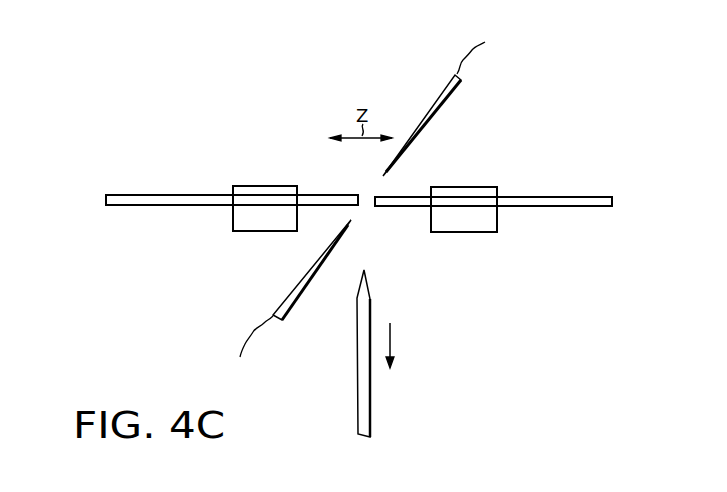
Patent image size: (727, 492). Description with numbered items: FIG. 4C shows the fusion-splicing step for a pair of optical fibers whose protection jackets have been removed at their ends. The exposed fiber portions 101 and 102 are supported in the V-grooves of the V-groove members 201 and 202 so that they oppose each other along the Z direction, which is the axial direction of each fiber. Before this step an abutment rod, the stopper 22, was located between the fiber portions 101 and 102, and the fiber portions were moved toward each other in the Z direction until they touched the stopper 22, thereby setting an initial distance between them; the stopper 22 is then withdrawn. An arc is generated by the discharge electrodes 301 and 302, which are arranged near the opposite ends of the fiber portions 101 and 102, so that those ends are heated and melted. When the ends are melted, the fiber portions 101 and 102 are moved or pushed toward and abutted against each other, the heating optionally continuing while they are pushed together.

The exposed fiber portion 101 is at (143, 207).
The exposed fiber portion 102 is at (552, 210).
The V-groove member 201 is at (258, 222).
The V-groove member 202 is at (459, 222).
The discharge electrode 301 is at (299, 305).
The discharge electrode 302 is at (440, 107).
The stopper 22 is at (372, 410).